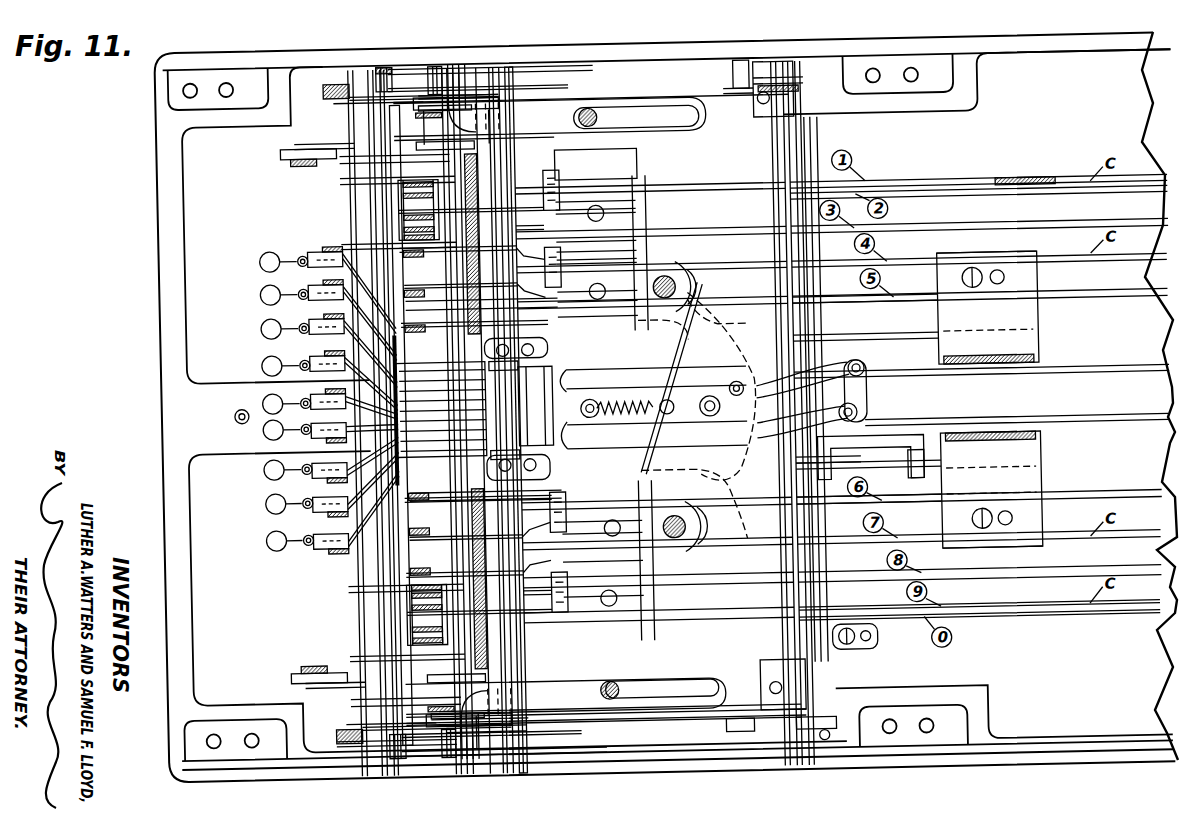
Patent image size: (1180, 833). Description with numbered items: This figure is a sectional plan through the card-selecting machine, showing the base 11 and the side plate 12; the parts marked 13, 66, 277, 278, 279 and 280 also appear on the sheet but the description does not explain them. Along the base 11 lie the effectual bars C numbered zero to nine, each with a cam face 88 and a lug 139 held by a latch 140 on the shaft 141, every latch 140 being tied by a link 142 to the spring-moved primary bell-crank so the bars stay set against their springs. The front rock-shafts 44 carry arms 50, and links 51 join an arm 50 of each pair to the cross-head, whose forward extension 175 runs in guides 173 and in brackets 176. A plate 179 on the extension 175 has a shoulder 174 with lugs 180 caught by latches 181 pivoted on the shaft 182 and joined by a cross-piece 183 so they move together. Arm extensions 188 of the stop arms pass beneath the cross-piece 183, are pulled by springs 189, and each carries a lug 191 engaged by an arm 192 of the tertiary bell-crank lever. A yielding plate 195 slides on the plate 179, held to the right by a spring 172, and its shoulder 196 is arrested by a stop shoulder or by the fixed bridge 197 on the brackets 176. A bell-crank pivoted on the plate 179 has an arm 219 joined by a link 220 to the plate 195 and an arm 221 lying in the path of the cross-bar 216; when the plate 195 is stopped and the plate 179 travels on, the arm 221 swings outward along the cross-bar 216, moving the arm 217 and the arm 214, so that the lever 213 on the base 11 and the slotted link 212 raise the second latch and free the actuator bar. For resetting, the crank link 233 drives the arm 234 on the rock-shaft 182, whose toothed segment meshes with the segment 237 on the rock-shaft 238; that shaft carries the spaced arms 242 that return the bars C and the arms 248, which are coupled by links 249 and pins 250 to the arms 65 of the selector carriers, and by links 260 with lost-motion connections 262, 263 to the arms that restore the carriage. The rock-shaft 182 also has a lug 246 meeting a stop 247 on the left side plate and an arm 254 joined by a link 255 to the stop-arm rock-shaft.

The base 11 is at (163, 395).
The plate 12 is at (575, 60).
The side plate 13 is at (985, 44).
The rock-shafts 44 is at (690, 287).
The arms 50 is at (680, 333).
The links 51 is at (930, 340).
The arms 65 is at (760, 112).
The post 66 is at (795, 170).
The cam face 88 is at (1025, 185).
The lug 139 is at (566, 195).
The latch 140 is at (650, 215).
The shaft 141 is at (516, 155).
The link 142 is at (445, 255).
The spring 172 is at (630, 400).
The guides 173 is at (890, 375).
The shoulder 174 is at (459, 409).
The extension 175 is at (1060, 426).
The brackets 176 is at (960, 370).
The plate 179 is at (745, 395).
The lugs 180 is at (552, 342).
The latches 181 is at (552, 470).
The shaft 182 is at (452, 152).
The cross-piece 183 is at (400, 365).
The arm extensions 188 is at (408, 300).
The springs 189 is at (304, 250).
The lug 191 is at (312, 296).
The arm 192 is at (316, 370).
The plate 195 is at (640, 415).
The shoulder 196 is at (522, 409).
The bridge 197 is at (712, 396).
The slotted link 212 is at (822, 740).
The lever 213 is at (822, 596).
The arm 214 is at (870, 470).
The cross-bar 216 is at (870, 480).
The arm 217 is at (935, 465).
The arm 219 is at (868, 405).
The link 220 is at (802, 380).
The arm 221 is at (807, 416).
The link 233 is at (520, 725).
The arm 234 is at (470, 735).
The segment 237 is at (370, 738).
The rock-shaft 238 is at (378, 555).
The arms 242 is at (372, 176).
The lug 246 is at (516, 62).
The stop 247 is at (525, 80).
The arms 248 is at (350, 92).
The links 249 is at (790, 88).
The pin 250 is at (748, 60).
The arm 254 is at (445, 64).
The link 255 is at (390, 62).
The links 260 is at (585, 112).
The lost motion connection 262 is at (598, 108).
The lost motion connection 263 is at (650, 108).
The bar 277 is at (348, 154).
The block 278 is at (286, 147).
The pad 279 is at (300, 159).
The bar 280 is at (300, 140).